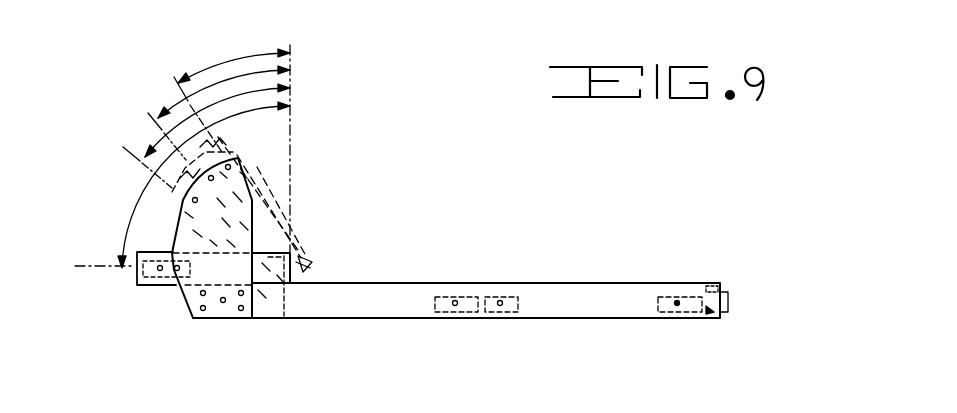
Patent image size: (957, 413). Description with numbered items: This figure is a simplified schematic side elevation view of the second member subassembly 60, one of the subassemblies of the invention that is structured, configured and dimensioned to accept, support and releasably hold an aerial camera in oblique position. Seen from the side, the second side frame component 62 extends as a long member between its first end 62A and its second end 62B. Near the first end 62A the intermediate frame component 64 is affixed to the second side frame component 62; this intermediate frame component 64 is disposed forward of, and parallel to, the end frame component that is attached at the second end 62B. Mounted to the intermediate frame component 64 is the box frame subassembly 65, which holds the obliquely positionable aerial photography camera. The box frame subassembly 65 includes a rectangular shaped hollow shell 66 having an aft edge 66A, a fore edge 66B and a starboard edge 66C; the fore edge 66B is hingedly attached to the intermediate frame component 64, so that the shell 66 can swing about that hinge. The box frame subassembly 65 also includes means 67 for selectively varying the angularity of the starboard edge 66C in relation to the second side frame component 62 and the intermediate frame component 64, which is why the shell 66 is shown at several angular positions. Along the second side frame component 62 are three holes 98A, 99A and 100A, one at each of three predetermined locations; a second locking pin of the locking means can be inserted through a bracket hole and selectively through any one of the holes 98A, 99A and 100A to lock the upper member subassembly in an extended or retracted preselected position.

The second member subassembly 60 is at (461, 281).
The second side frame component 62 is at (546, 315).
The first end of second side frame component 62A is at (192, 318).
The second end of second side frame component 62B is at (709, 318).
The intermediate frame component 64 is at (294, 302).
The box frame subassembly 65 is at (318, 157).
The rectangular shaped shell 66 is at (151, 286).
The aft edge 66A is at (136, 286).
The fore edge 66B is at (292, 283).
The starboard edge 66C is at (171, 288).
The means for selectively varying the angularity 67 is at (262, 146).
The hole 98A is at (455, 306).
The hole 99A is at (501, 306).
The hole 100A is at (677, 306).